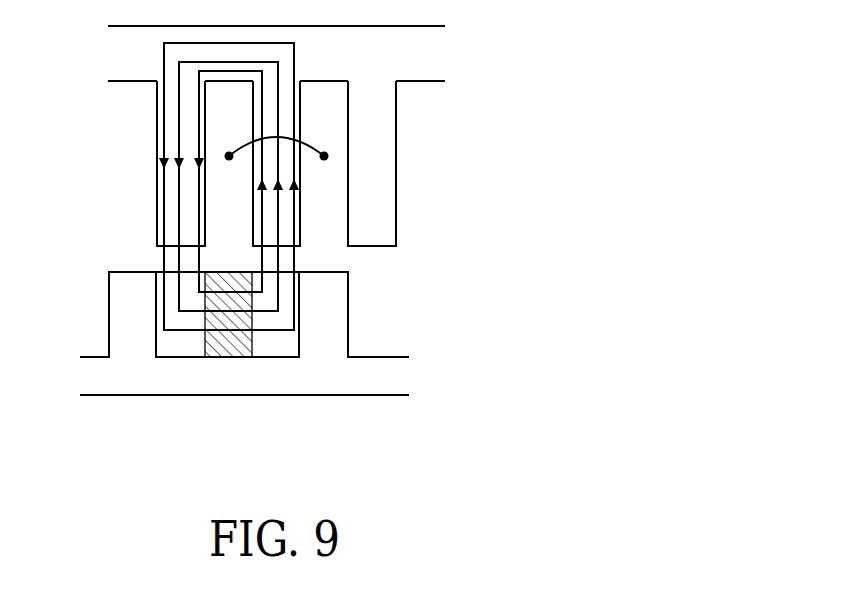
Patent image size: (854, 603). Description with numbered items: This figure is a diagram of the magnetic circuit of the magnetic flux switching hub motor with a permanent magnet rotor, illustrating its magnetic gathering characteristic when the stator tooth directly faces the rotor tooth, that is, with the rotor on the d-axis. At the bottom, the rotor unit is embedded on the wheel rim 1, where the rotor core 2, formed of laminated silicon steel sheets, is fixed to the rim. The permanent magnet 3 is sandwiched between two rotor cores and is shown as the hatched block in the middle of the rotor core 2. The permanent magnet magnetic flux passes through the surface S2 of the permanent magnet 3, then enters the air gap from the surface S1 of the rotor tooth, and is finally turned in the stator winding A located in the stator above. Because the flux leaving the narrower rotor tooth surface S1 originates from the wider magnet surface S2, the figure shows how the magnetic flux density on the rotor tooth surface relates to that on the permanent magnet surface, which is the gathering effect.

The wheel rim 1 is at (133, 366).
The rotor core 2 is at (276, 342).
The permanent magnet 3 is at (232, 345).
The stator winding A is at (247, 186).
The surface of the rotor tooth S1 is at (292, 266).
The surface of the permanent magnet S2 is at (266, 325).